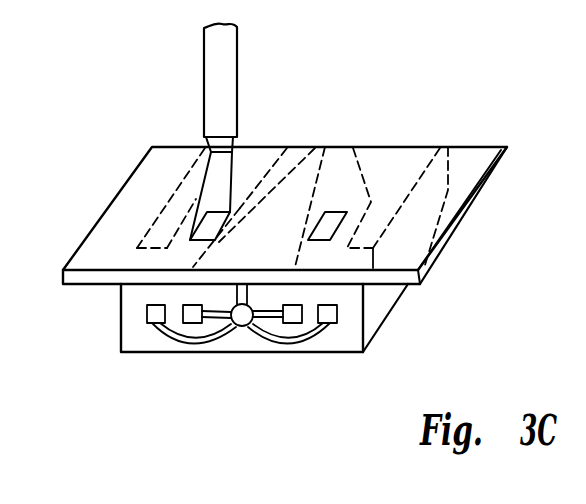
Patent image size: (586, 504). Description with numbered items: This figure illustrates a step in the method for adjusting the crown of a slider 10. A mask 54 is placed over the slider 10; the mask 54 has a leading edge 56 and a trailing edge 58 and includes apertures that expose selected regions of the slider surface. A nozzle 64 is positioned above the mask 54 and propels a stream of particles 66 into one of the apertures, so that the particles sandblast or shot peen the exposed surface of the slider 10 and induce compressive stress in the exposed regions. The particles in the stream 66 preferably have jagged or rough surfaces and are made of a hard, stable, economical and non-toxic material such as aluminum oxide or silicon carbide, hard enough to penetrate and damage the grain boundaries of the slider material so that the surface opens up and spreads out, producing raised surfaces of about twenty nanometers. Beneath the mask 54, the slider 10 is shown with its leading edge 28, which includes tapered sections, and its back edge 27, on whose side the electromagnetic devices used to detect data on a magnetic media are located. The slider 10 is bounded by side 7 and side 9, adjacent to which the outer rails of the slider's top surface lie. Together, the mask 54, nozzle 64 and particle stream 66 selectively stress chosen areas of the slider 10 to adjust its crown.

The side 7 is at (120, 317).
The side 9 is at (380, 300).
The slider 10 is at (347, 335).
The back edge 27 is at (203, 277).
The leading edge 28 is at (388, 147).
The mask 54 is at (430, 218).
The leading edge 56 is at (105, 267).
The trailing edge 58 is at (287, 147).
The nozzle 64 is at (220, 94).
The stream of particles 66 is at (215, 178).